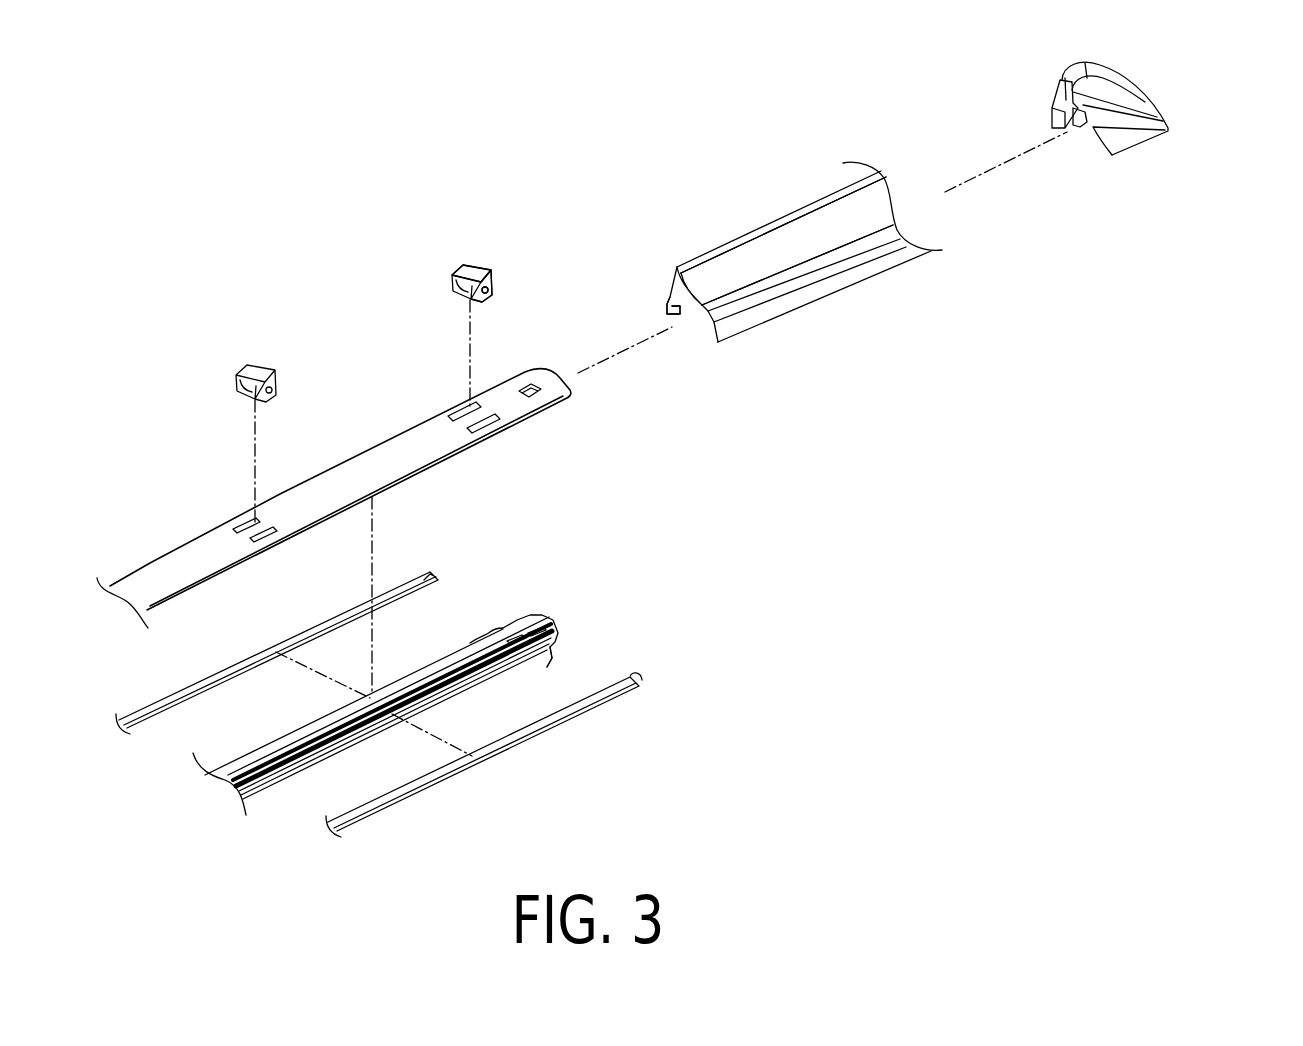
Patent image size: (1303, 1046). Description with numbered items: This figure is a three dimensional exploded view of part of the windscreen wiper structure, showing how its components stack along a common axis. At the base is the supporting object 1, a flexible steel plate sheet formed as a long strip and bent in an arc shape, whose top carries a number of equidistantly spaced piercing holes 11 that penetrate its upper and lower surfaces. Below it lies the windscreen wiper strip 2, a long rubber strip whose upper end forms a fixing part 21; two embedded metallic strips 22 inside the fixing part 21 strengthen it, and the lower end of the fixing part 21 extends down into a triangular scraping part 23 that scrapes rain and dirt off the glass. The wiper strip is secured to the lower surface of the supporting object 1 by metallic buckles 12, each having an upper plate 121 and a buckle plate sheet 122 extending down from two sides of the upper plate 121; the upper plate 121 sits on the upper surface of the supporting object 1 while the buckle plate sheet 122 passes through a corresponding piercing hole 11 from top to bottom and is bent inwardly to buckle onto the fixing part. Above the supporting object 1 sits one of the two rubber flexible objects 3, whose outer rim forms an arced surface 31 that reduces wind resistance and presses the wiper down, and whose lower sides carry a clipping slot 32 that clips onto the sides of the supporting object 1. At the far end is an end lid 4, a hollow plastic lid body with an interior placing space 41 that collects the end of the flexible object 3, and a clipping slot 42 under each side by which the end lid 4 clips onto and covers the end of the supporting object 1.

The supporting object 1 is at (162, 557).
The piercing holes 11 is at (457, 408).
The metallic buckles 12 is at (460, 268).
The upper plate 121 is at (478, 266).
The buckle plate sheet 122 is at (497, 283).
The windscreen wiper strip 2 is at (569, 622).
The fixing part 21 is at (525, 628).
The embedded metallic strips 22 is at (432, 572).
The scraping part 23 is at (552, 653).
The flexible objects 3 is at (784, 216).
The arced surface 31 is at (777, 247).
The clipping slot 32 is at (673, 316).
The end lids 4 is at (1153, 143).
The placing space 41 is at (1058, 95).
The clipping slot 42 is at (1070, 132).